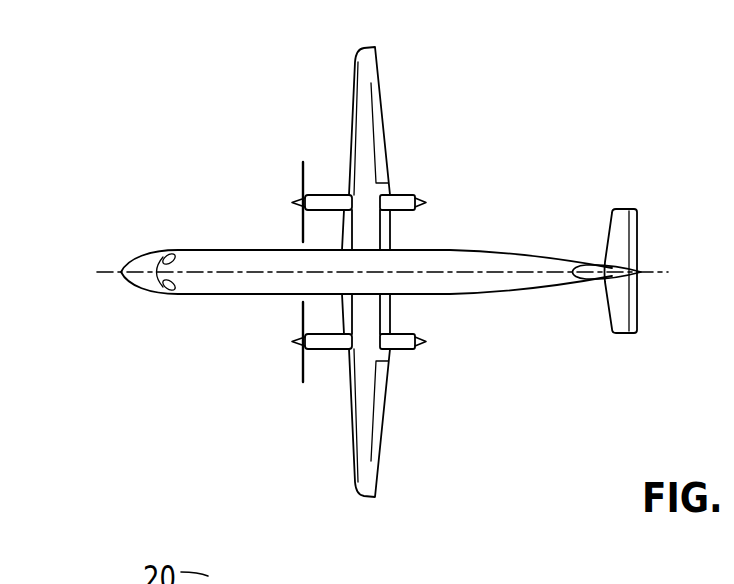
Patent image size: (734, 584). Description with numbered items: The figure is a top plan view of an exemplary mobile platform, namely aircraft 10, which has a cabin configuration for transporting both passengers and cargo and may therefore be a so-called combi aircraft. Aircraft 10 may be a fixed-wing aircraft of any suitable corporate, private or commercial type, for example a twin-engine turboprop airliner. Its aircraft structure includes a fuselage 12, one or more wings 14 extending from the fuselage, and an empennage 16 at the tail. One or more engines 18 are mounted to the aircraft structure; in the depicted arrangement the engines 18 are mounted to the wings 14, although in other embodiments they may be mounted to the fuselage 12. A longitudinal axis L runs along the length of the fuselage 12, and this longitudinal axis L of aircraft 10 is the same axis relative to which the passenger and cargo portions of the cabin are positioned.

The aircraft 10 is at (124, 83).
The fuselage 12 is at (232, 250).
The wings 14 is at (351, 140).
The empennage 16 is at (637, 216).
The engines 18 is at (323, 195).
The longitudinal axis L is at (101, 272).